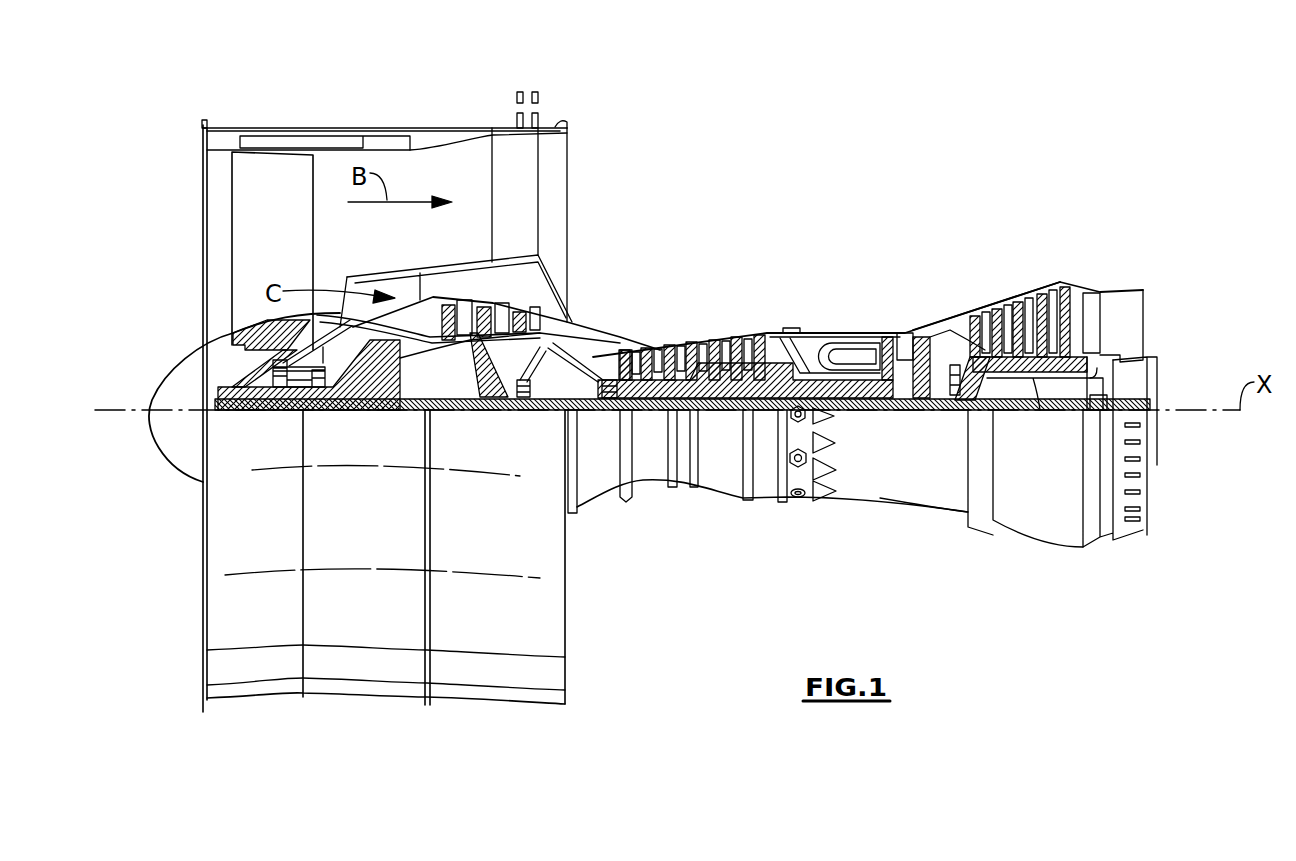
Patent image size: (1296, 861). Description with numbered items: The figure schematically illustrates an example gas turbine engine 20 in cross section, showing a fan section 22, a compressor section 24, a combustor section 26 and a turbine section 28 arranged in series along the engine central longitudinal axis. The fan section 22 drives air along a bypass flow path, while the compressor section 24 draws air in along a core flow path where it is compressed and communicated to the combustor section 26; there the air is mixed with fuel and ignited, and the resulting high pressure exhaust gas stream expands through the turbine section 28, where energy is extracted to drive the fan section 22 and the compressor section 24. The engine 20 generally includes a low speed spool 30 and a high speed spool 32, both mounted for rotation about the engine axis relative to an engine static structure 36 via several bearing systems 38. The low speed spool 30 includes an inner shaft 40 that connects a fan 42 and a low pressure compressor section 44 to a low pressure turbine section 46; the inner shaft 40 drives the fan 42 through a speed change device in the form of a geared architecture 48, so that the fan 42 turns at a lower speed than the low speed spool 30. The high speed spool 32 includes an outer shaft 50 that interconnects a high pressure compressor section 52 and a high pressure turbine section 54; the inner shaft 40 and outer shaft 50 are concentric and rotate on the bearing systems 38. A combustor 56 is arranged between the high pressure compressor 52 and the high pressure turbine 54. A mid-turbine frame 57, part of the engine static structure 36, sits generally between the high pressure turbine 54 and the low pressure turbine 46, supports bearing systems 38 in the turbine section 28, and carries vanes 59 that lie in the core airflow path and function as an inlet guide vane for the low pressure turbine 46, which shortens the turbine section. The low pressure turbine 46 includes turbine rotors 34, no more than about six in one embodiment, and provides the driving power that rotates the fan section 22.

The gas turbine engine 20 is at (845, 179).
The fan section 22 is at (412, 99).
The compressor section 24 is at (425, 245).
The combustor section 26 is at (880, 245).
The turbine section 28 is at (1100, 245).
The low speed spool 30 is at (723, 414).
The high speed spool 32 is at (768, 337).
The turbine rotors 34 is at (1040, 407).
The engine static structure 36 is at (765, 497).
The bearing systems 38 is at (283, 383).
The inner shaft 40 is at (597, 413).
The fan 42 is at (288, 254).
The low pressure compressor section 44 is at (538, 258).
The low pressure turbine section 46 is at (1033, 303).
The geared architecture 48 is at (387, 395).
The outer shaft 50 is at (850, 408).
The high pressure compressor section 52 is at (697, 368).
The high pressure turbine section 54 is at (903, 330).
The combustor 56 is at (840, 353).
The mid-turbine frame 57 is at (947, 321).
The vanes 59 is at (980, 405).